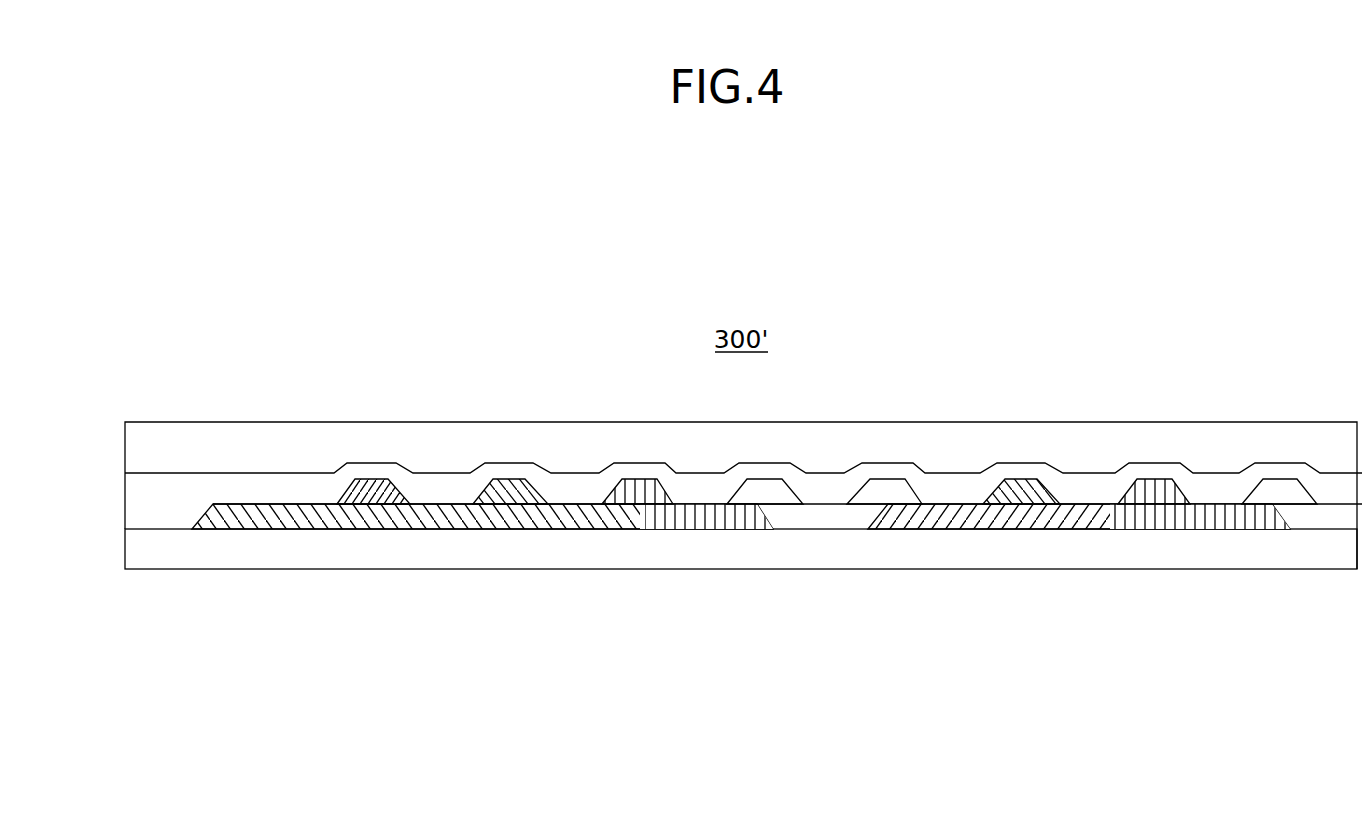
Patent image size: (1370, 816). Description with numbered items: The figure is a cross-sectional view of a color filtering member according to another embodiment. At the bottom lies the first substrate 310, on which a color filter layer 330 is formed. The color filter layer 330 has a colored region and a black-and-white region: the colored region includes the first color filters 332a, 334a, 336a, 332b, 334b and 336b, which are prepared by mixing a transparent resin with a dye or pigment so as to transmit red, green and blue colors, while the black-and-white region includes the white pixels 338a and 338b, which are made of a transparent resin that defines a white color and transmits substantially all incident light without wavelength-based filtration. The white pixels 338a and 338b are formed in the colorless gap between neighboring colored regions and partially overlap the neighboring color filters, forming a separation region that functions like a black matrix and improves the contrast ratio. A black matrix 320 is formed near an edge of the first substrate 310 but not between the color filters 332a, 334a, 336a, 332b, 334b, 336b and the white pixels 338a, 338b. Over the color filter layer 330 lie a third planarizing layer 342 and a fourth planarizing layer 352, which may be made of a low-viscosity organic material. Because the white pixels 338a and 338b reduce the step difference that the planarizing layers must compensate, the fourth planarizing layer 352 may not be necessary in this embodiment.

The first substrate 310 is at (163, 562).
The black matrix 320 is at (268, 525).
The color filter layer 330 is at (841, 586).
The first color filter 332a is at (438, 512).
The first color filter 334a is at (573, 525).
The first color filter 336a is at (707, 525).
The white pixel 338a is at (797, 522).
The first color filter 332b is at (952, 507).
The first color filter 334b is at (1085, 518).
The first color filter 336b is at (1218, 525).
The white pixel 338b is at (1294, 562).
The third planarizing layer 342 is at (822, 490).
The fourth planarizing layer 352 is at (847, 455).